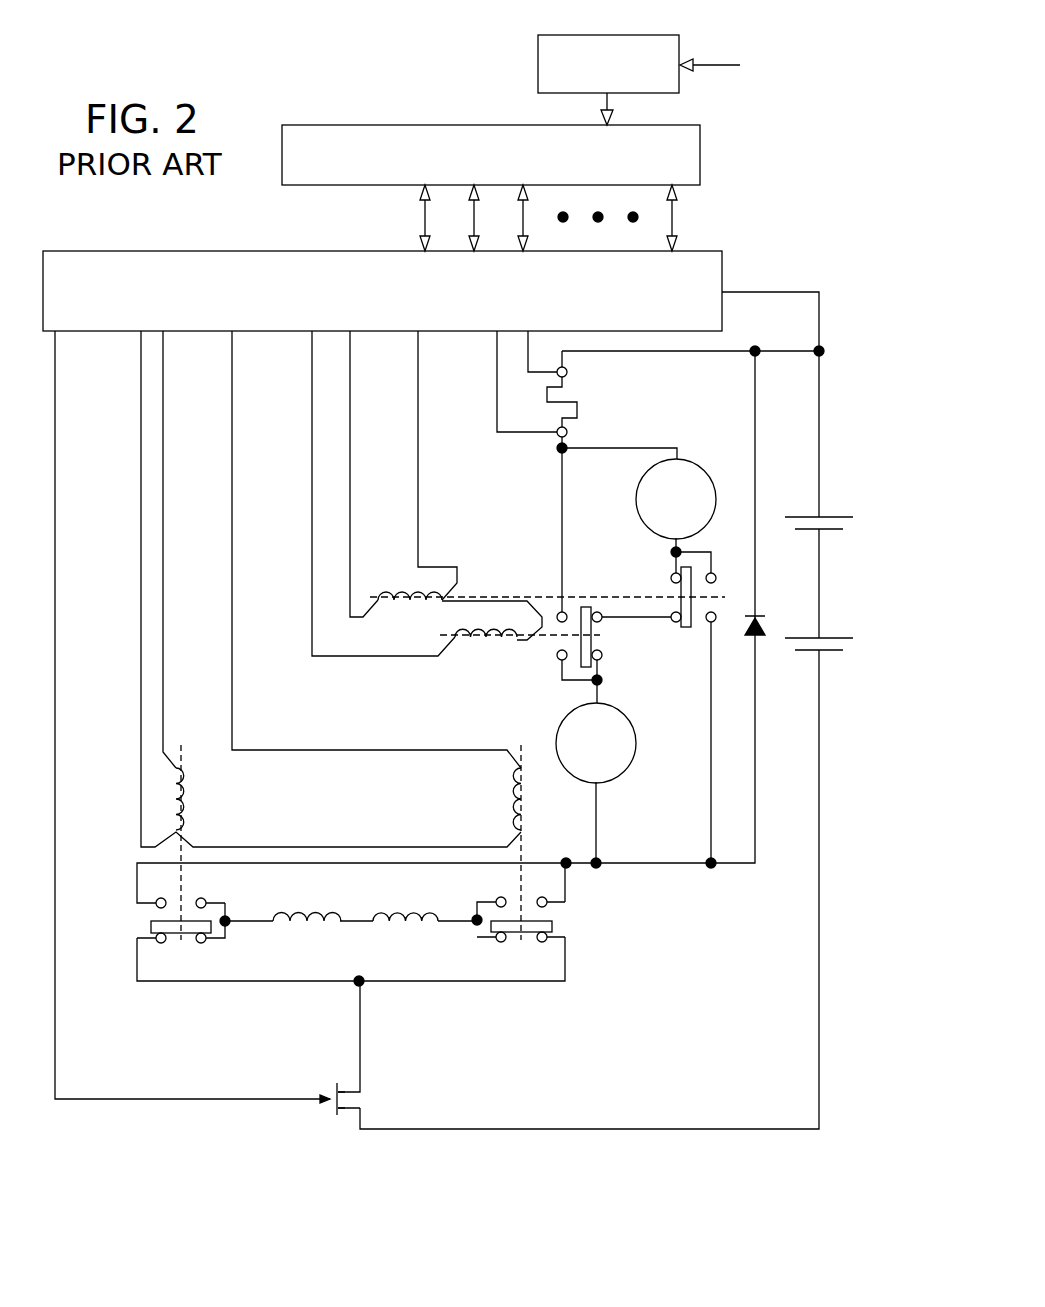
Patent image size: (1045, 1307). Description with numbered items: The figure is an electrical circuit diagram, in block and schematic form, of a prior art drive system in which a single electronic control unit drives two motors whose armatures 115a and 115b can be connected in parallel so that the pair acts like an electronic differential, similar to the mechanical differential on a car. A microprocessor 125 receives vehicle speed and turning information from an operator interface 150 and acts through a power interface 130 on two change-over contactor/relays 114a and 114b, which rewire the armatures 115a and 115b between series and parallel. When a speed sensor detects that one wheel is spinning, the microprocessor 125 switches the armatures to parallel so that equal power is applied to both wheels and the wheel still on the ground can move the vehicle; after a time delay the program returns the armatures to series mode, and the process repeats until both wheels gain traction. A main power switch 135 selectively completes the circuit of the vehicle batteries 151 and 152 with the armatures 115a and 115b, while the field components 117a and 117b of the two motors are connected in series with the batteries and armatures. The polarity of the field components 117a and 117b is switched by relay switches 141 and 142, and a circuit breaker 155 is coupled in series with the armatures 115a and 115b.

The operator interface 150 is at (598, 36).
The microprocessor 125 is at (330, 126).
The power interface 130 is at (406, 252).
The circuit breaker 155 is at (570, 392).
The armature 115a is at (712, 484).
The change-over contactor/relay 114a is at (672, 592).
The change-over contactor/relay 114b is at (555, 647).
The vehicle battery 151 is at (826, 518).
The vehicle battery 152 is at (826, 638).
The armature 115b is at (605, 783).
The relay switch 141 is at (140, 922).
The relay switch 142 is at (566, 912).
The field component 117a is at (275, 930).
The field component 117b is at (395, 928).
The main power switch 135 is at (358, 1100).